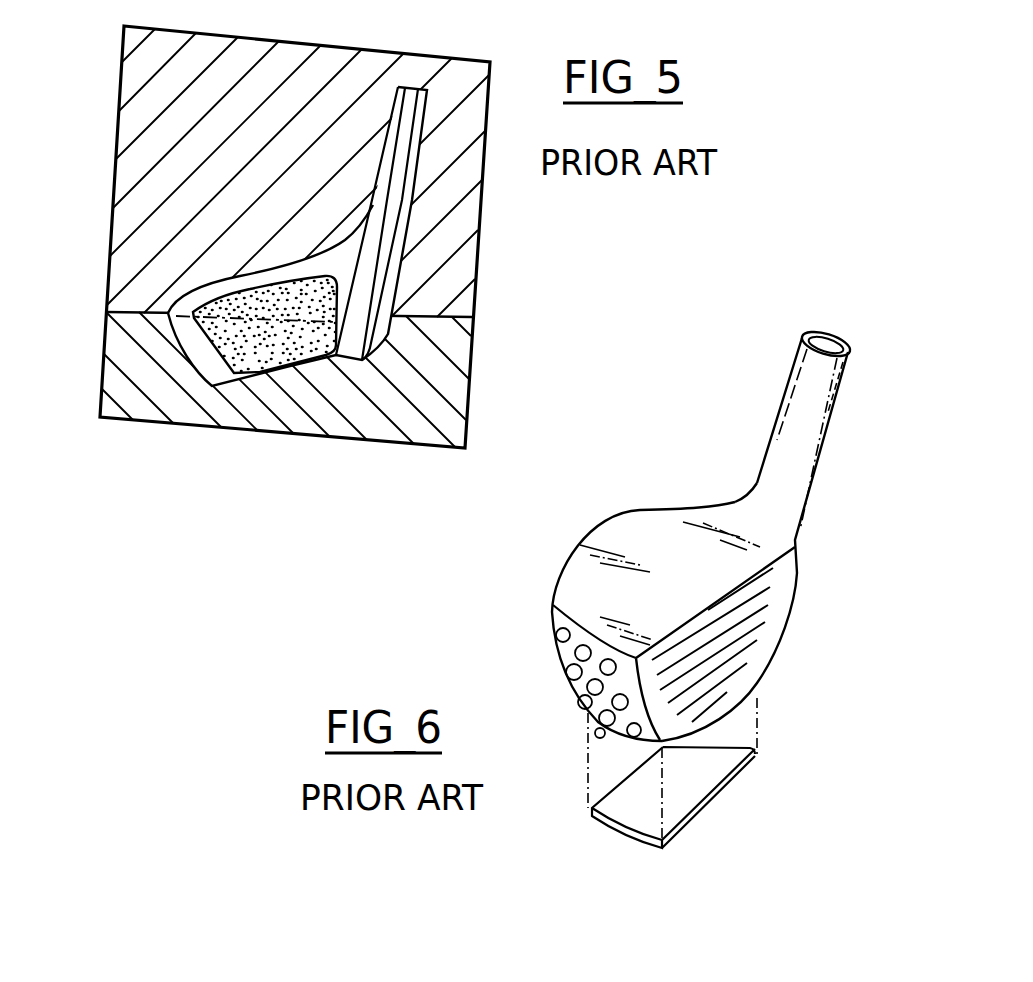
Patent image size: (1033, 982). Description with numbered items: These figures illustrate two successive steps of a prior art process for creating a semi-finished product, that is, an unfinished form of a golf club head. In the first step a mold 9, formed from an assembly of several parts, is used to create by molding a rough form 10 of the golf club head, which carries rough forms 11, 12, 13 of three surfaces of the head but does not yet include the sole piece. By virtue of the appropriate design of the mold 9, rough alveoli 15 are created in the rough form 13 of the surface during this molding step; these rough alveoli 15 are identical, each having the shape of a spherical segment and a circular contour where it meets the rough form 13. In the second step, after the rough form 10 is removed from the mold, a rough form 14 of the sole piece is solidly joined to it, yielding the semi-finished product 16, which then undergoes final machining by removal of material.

In FIG. 5, the mold 9 is at (137, 253).
In FIG. 5, the rough form of the golf club head 10 is at (210, 364).
In FIG. 6, the rough form of the golf club head 10 is at (733, 505).
In FIG. 5, the rough form of surface 11 is at (242, 266).
In FIG. 6, the rough form of surface 11 is at (652, 553).
In FIG. 6, the rough form of surface 12 is at (652, 705).
In FIG. 5, the rough form of surface 13 is at (170, 343).
In FIG. 6, the rough form of surface 13 is at (560, 674).
In FIG. 6, the rough form of the sole piece 14 is at (636, 806).
In FIG. 6, the rough alveoli 15 is at (558, 638).
In FIG. 6, the semi-finished product 16 is at (806, 619).